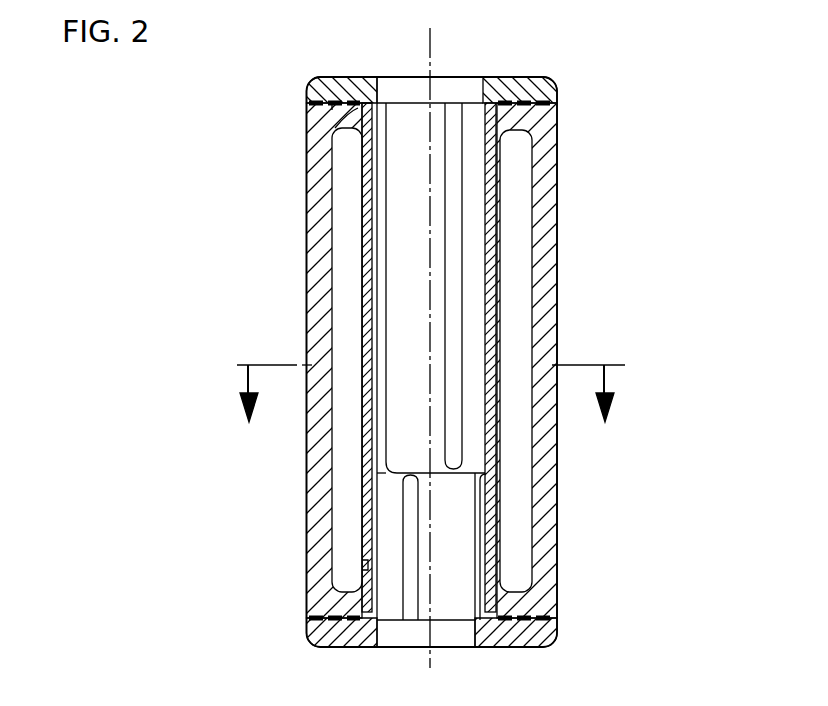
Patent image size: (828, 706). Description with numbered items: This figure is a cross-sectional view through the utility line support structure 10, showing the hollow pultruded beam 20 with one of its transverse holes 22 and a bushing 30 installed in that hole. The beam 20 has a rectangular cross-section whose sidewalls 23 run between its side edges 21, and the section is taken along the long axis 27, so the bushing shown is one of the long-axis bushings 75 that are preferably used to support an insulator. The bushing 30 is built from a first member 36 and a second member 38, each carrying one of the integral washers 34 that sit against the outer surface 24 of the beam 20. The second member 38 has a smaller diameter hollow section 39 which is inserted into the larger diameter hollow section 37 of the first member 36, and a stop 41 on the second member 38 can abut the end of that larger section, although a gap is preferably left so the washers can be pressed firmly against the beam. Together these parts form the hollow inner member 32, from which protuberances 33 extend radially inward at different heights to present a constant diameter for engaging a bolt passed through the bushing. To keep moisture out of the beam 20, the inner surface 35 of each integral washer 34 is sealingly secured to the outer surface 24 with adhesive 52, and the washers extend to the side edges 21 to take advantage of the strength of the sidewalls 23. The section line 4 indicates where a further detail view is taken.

The utility line support structure 10 is at (602, 90).
The hollow pultruded beam 20 is at (558, 210).
The side edges 21 is at (306, 104).
The transverse holes 22 is at (380, 640).
The sidewalls 23 is at (306, 467).
The outer surface 24 is at (333, 103).
The long axis 27 is at (430, 41).
The bushing 30 is at (521, 67).
The hollow inner member 32 is at (350, 275).
The protuberances 33 is at (410, 510).
The integral washers 34 is at (492, 83).
The inner surface 35 is at (357, 105).
The first member 36 is at (473, 262).
The larger diameter hollow section 37 is at (495, 297).
The second member 38 is at (460, 602).
The smaller diameter hollow section 39 is at (488, 521).
The stop 41 is at (365, 563).
The adhesive 52 is at (358, 103).
The long-axis bushings 75 is at (510, 657).
The section line 4- 4 is at (431, 415).